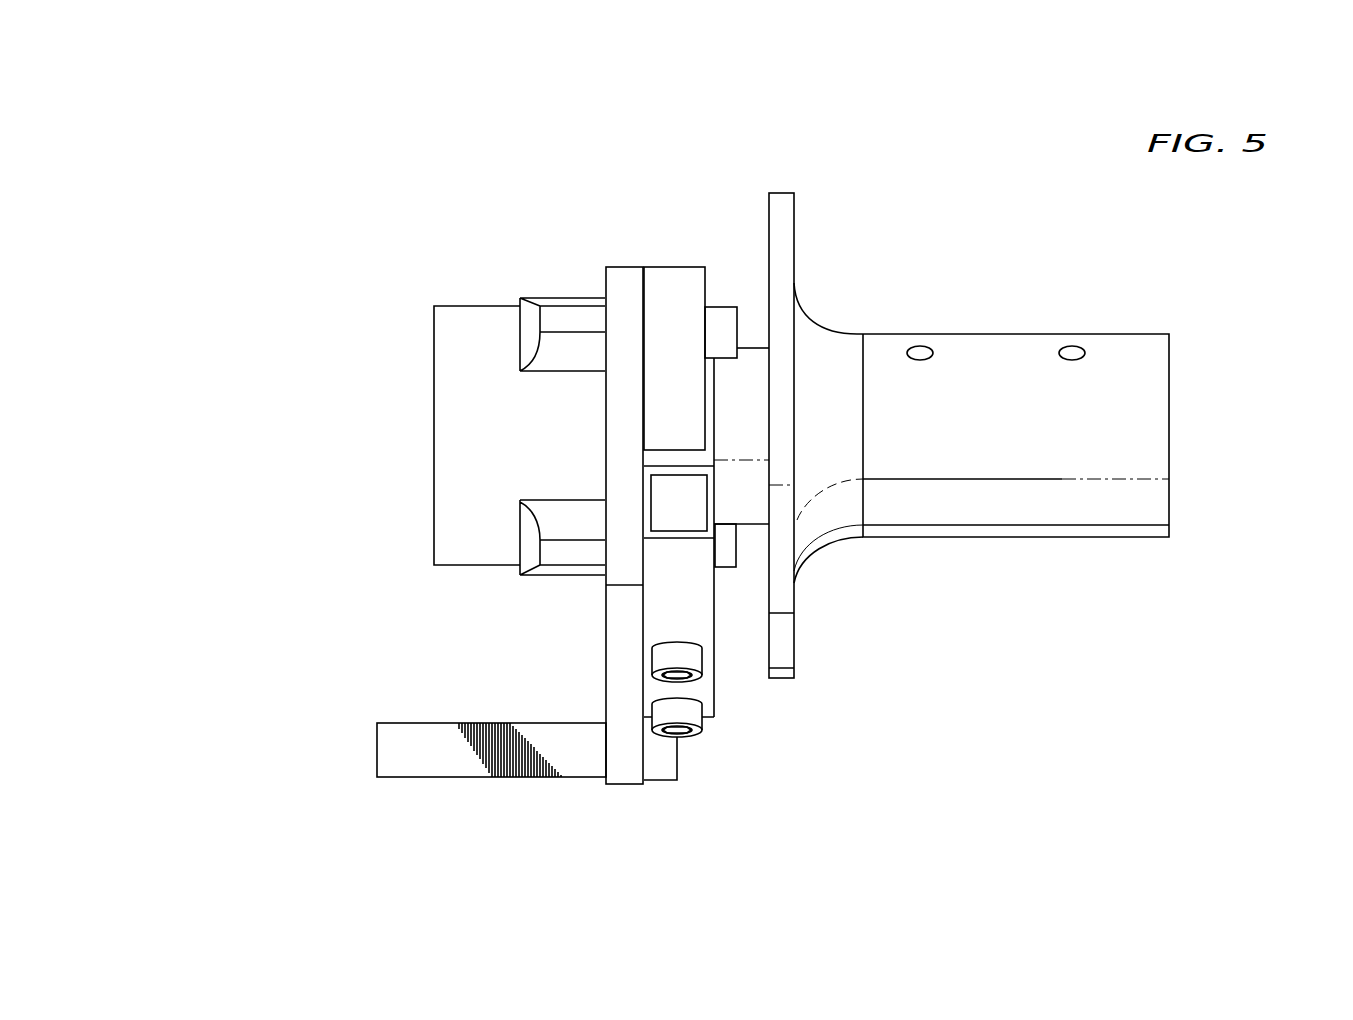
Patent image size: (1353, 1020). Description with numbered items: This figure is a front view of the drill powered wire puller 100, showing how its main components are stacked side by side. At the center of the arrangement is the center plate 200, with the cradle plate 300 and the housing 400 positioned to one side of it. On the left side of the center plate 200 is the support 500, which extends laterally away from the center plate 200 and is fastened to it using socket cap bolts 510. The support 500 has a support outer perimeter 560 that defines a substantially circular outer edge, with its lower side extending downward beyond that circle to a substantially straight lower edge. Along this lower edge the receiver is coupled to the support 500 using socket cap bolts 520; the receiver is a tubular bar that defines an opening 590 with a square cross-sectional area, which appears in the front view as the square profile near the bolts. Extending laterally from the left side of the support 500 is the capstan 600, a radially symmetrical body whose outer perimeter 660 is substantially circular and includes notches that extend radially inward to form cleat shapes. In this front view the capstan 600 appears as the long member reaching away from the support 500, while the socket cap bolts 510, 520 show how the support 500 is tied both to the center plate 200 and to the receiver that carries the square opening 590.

The drill powered wire puller 100 is at (266, 161).
The center plate 200 is at (622, 293).
The cradle plate 300 is at (395, 750).
The housing 400 is at (513, 403).
The support 500 is at (660, 278).
The socket cap bolts 510 is at (720, 318).
The socket cap bolts 520 is at (692, 662).
The support outer perimeter 560 is at (678, 267).
The opening 590 is at (685, 510).
The capstan 600 is at (1057, 510).
The capstan outer perimeter 660 is at (782, 680).